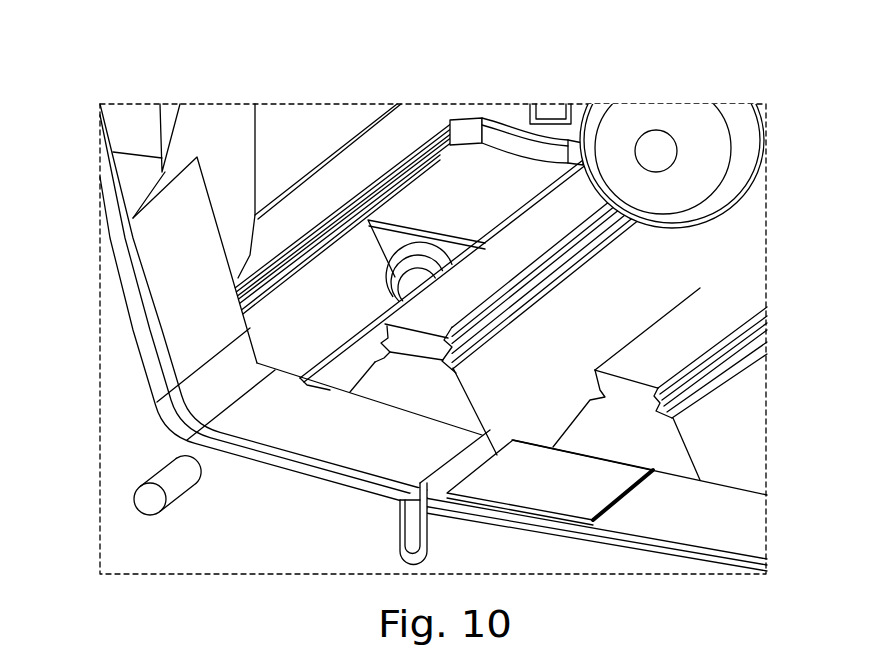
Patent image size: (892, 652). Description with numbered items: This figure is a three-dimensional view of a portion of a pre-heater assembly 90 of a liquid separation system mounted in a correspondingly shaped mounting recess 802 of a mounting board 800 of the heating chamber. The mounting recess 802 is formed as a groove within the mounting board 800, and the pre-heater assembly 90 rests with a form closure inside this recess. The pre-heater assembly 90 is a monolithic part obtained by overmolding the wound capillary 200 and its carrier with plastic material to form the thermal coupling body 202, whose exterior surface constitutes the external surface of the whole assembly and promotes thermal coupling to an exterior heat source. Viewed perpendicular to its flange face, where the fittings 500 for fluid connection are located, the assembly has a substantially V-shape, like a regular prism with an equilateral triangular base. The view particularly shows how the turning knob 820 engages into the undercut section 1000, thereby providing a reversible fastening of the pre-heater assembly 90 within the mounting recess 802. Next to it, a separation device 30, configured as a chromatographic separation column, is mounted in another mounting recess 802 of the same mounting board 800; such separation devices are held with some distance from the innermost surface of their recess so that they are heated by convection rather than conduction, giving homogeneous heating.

The separation device 30 is at (667, 205).
The pre-heater assembly 90 is at (487, 196).
The capillary 200 is at (322, 362).
The thermal coupling body 202 is at (405, 211).
The fitting 500 is at (378, 280).
The mounting board 800 is at (370, 138).
The mounting recess 802 is at (492, 385).
The turning knob 820 is at (476, 130).
The undercut section 1000 is at (433, 140).